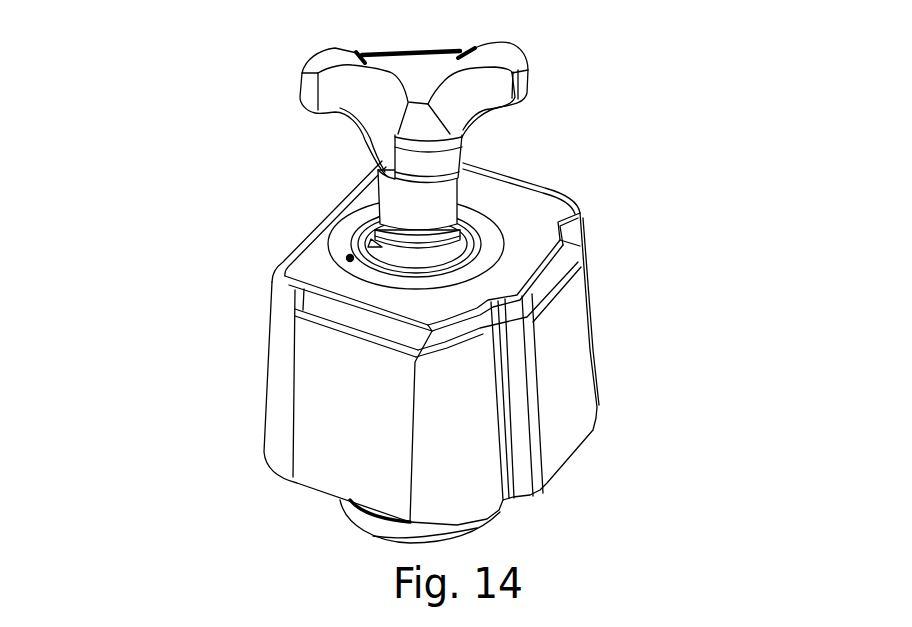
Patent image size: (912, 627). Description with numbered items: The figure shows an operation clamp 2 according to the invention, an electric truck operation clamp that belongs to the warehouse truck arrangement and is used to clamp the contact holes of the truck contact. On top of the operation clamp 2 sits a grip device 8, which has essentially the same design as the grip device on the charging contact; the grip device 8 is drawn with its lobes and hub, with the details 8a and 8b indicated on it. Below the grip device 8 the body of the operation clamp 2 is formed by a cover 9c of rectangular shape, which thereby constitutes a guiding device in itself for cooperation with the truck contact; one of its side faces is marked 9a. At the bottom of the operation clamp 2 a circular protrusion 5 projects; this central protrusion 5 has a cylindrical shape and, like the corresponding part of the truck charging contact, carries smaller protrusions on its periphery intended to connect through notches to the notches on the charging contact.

The operation clamp 2 is at (641, 221).
The circular protrusion 5 is at (367, 525).
The grip device 8 is at (338, 53).
The knob lobe 8a is at (522, 80).
The marker 8b is at (348, 256).
The right side face of housing 9a is at (556, 402).
The cover 9c is at (322, 385).